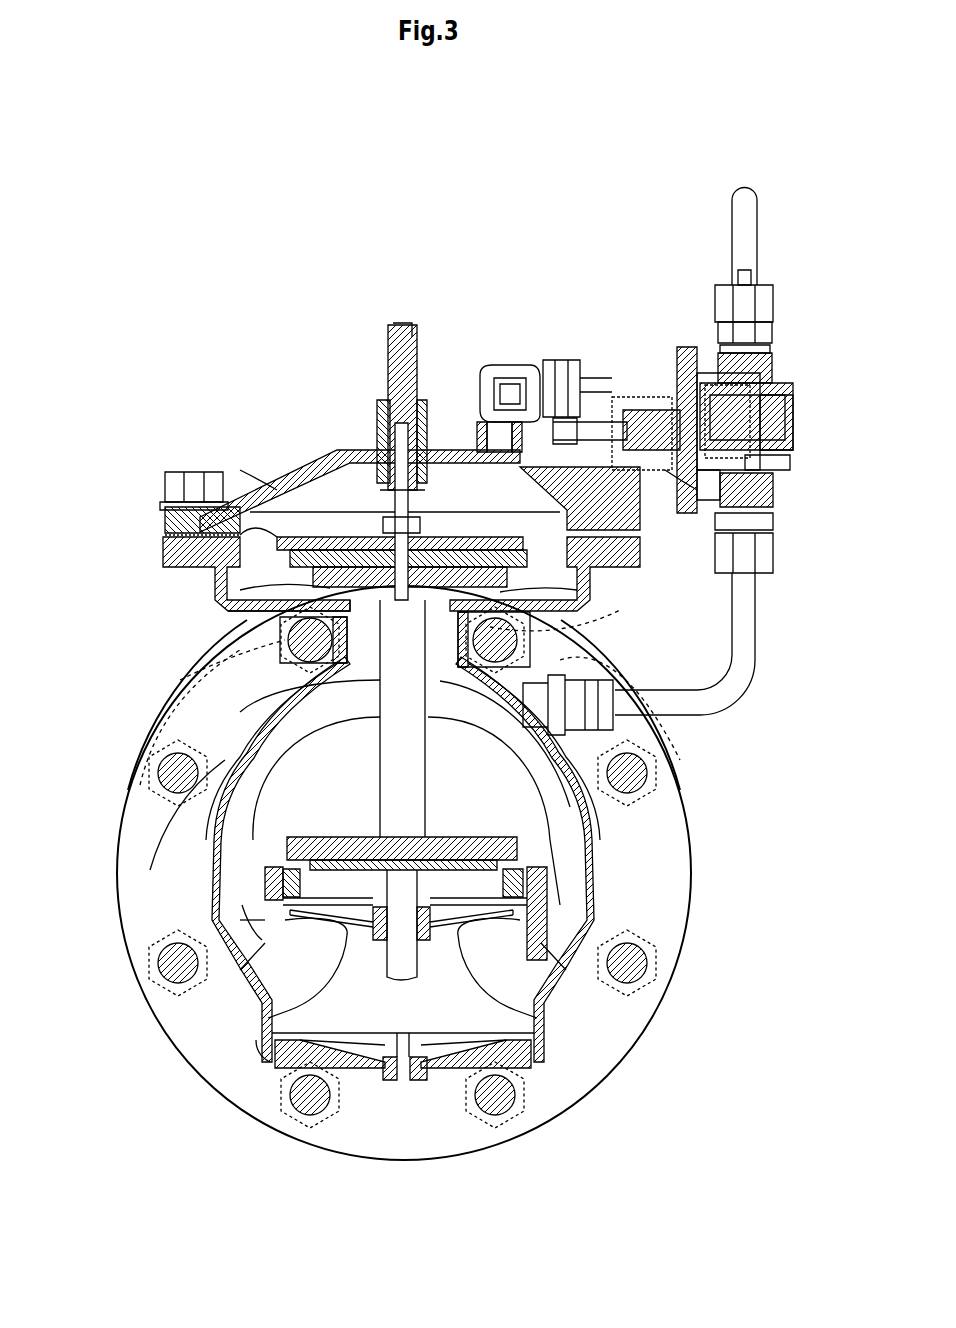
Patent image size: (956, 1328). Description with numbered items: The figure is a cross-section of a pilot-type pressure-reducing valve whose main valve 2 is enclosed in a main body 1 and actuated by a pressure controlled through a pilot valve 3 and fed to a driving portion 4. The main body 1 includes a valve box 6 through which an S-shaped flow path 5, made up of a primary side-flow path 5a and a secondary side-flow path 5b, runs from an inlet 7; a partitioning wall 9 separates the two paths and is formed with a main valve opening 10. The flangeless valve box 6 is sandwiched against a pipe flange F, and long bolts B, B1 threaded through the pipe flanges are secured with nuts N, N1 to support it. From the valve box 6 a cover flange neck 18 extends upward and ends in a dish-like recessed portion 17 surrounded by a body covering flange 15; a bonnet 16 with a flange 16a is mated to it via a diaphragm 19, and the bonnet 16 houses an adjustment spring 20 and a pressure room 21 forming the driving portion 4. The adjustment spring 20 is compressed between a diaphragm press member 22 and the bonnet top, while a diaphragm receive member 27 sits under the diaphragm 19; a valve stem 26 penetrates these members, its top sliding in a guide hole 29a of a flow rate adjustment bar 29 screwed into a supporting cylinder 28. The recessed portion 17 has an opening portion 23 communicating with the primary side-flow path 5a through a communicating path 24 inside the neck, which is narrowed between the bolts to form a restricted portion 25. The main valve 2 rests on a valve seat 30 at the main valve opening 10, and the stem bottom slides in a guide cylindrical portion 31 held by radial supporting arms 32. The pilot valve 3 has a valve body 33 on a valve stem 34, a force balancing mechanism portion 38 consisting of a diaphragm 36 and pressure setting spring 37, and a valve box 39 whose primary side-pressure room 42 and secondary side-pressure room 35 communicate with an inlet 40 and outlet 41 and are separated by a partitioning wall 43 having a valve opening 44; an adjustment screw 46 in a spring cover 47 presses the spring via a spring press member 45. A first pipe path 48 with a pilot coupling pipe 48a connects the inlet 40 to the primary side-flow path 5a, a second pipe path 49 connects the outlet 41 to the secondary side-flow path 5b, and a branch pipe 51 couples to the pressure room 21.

The main body 1 is at (243, 1080).
The main valve 2 is at (530, 850).
The pilot valve 3 is at (795, 432).
The driving portion 4 is at (262, 470).
The flow path 5 is at (52, 832).
The primary side-flow path 5a is at (228, 857).
The secondary side-flow path 5b is at (242, 907).
The valve box 6 is at (542, 1072).
The inlet 7 is at (515, 830).
The partitioning wall 9 is at (562, 918).
The main valve opening 10 is at (548, 1000).
The body covering flange 15 is at (170, 560).
The bonnet 16 is at (278, 455).
The flange 16a is at (192, 506).
The recessed portion 17 is at (590, 596).
The cover flange neck 18 is at (282, 640).
The diaphragm 19 is at (245, 472).
The adjustment spring 20 is at (345, 475).
The pressure room 21 is at (357, 452).
The diaphragm press member 22 is at (567, 500).
The opening portion 23 is at (262, 606).
The communicating path 24 is at (192, 722).
The restricted portion 25 is at (528, 620).
The valve stem 26 is at (392, 807).
The diaphragm receive member 27 is at (242, 585).
The supporting cylinder 28 is at (385, 410).
The flow rate adjustment bar 29 is at (392, 335).
The guide hole 29a is at (385, 420).
The valve seat 30 is at (542, 876).
The guide cylindrical portion 31 is at (257, 1015).
The supporting arms 32 is at (250, 1012).
The valve body 33 is at (770, 466).
The valve stem 34 is at (722, 393).
The secondary side-pressure room 35 is at (770, 497).
The diaphragm 36 is at (690, 376).
The pressure setting spring 37 is at (678, 400).
The force balancing mechanism portion 38 is at (640, 397).
The valve box 39 is at (708, 500).
The inlet 40 is at (762, 345).
The outlet 41 is at (770, 522).
The primary side-pressure room 42 is at (777, 380).
The partitioning wall 43 is at (672, 505).
The valve opening 44 is at (786, 402).
The spring press member 45 is at (604, 390).
The adjustment screw 46 is at (537, 395).
The spring cover 47 is at (560, 383).
The first pipe path 48 is at (750, 205).
The pilot coupling pipe 48a is at (735, 262).
The second pipe path 49 is at (742, 683).
The branch pipe 51 is at (598, 375).
The bolt B is at (228, 668).
The bolt B1 is at (462, 650).
The nut N is at (180, 680).
The nut N1 is at (527, 628).
The pipe flange F is at (362, 1142).